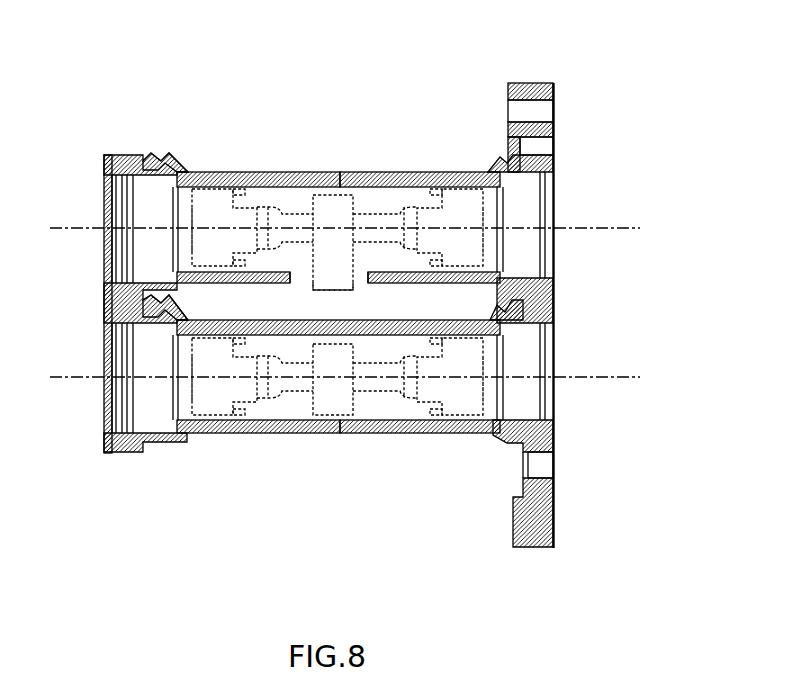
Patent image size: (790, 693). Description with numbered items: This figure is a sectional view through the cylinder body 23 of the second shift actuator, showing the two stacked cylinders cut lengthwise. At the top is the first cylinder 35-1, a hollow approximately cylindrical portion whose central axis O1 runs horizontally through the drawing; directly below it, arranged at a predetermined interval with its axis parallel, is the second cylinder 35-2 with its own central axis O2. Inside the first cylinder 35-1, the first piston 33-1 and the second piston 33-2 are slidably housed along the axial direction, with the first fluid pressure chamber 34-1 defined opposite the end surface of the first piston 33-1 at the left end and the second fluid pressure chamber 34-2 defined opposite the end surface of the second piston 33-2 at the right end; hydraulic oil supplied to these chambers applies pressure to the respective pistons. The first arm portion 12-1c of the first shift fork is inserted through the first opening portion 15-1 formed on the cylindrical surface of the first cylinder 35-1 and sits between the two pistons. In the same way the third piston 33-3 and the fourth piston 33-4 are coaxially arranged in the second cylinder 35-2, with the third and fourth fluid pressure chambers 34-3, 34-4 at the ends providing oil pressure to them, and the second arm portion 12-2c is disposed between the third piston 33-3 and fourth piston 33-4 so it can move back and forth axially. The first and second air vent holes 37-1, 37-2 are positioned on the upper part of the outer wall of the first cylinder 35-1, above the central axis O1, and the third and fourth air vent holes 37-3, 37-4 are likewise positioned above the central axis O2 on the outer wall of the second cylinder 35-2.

The cylinder body 23 is at (256, 95).
The first air vent hole 37-1 is at (166, 157).
The second air vent hole 37-2 is at (496, 166).
The third air vent hole 37-3 is at (106, 306).
The fourth air vent hole 37-4 is at (550, 306).
The first fluid pressure chamber 34-1 is at (172, 217).
The second fluid pressure chamber 34-2 is at (500, 213).
The third fluid pressure chamber 34-3 is at (187, 367).
The fourth fluid pressure chamber 34-4 is at (500, 360).
The first piston 33-1 is at (254, 173).
The second piston 33-2 is at (403, 173).
The third piston 33-3 is at (258, 434).
The fourth piston 33-4 is at (410, 434).
The first cylinder 35-1 is at (425, 172).
The second cylinder 35-2 is at (198, 434).
The first arm portion 12-1c is at (333, 217).
The second arm portion 12-2c is at (330, 400).
The first opening portion 15-1 is at (366, 296).
The central axis of the first cylinder O1 is at (366, 229).
The central axis of the second cylinder O2 is at (366, 378).